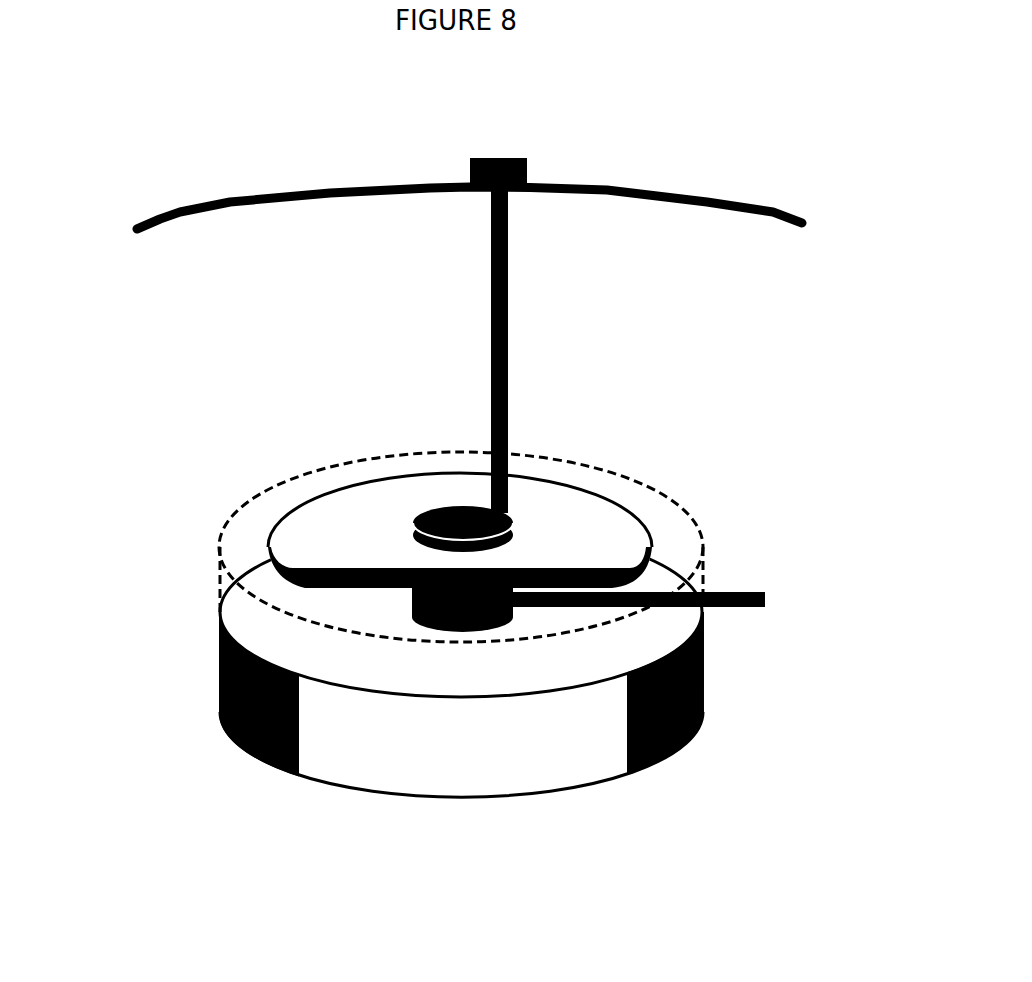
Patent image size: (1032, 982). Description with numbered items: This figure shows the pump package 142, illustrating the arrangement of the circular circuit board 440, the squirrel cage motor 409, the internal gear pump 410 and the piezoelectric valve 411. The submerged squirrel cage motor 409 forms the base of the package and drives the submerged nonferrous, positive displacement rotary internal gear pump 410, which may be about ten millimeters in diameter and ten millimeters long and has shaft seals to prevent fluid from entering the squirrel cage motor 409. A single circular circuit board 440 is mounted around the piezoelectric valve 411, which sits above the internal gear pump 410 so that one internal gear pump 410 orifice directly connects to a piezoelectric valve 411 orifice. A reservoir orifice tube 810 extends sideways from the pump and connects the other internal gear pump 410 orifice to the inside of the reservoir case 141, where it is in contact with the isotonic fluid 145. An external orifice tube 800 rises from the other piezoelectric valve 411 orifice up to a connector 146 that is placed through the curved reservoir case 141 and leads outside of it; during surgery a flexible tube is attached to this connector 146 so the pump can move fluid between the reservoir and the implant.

The reservoir case 141 is at (840, 185).
The isotonic fluid 145 is at (381, 232).
The connector 146 is at (567, 100).
The external orifice tube 800 is at (517, 324).
The piezoelectric valve 411 is at (403, 519).
The pump package 142 is at (660, 476).
The circular circuit board 440 is at (663, 549).
The internal gear pump 410 is at (402, 622).
The reservoir orifice tube 810 is at (775, 610).
The squirrel cage motor 409 is at (477, 808).